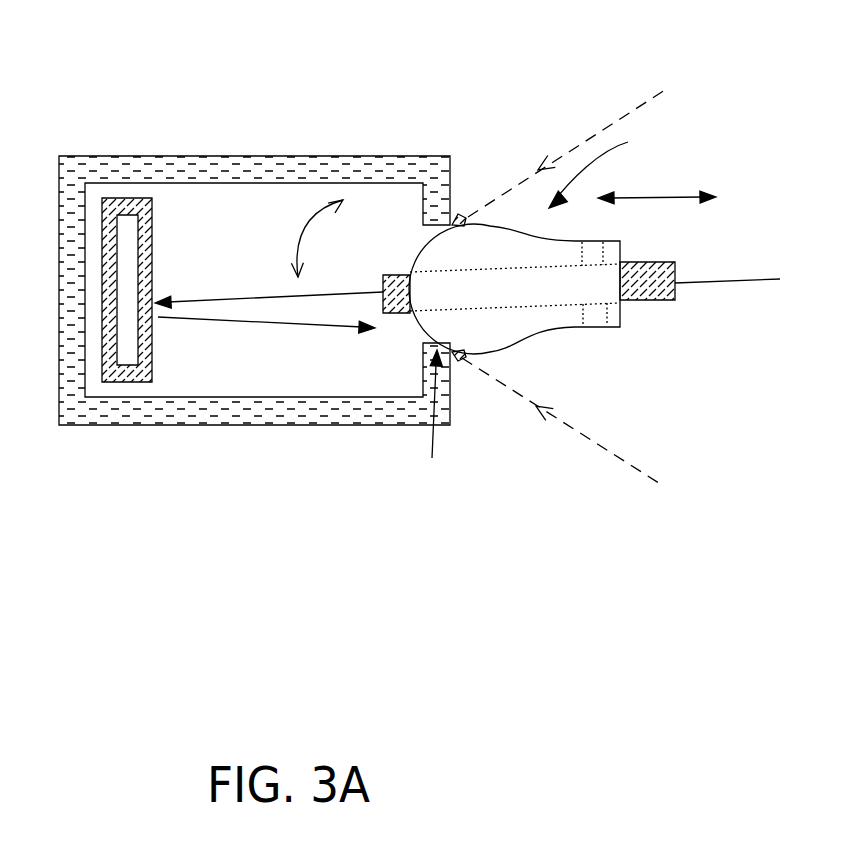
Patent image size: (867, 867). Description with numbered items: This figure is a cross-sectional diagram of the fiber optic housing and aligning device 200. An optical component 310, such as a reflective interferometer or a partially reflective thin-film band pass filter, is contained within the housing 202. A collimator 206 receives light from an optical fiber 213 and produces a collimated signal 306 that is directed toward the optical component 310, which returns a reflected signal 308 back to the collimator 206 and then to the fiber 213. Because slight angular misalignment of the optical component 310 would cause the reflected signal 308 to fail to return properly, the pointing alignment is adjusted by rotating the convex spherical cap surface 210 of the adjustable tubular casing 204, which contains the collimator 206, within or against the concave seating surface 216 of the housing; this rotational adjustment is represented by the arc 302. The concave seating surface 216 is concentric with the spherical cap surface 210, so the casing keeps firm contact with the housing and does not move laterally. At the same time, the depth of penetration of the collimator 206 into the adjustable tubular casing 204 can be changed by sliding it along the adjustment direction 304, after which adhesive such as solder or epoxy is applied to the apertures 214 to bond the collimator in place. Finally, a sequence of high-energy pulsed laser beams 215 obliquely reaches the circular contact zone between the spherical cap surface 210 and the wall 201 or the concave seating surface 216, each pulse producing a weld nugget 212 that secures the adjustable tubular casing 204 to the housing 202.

The fiber optic housing and aligning device 200 is at (118, 70).
The wall 201 is at (452, 418).
The housing 202 is at (320, 155).
The adjustable tubular casing 204 is at (611, 168).
The collimator 206 is at (395, 313).
The convex spherical cap surface 210 is at (410, 244).
The weld nugget 212 is at (461, 219).
The optical fiber 213 is at (745, 281).
The apertures 214 is at (592, 252).
The high-energy pulsed laser beams 215 is at (572, 152).
The concave seating surface 216 is at (421, 418).
The arc 302 is at (296, 233).
The adjustment direction 304 is at (650, 197).
The collimated signal 306 is at (263, 297).
The reflected signal 308 is at (312, 330).
The optical component 310 is at (153, 357).